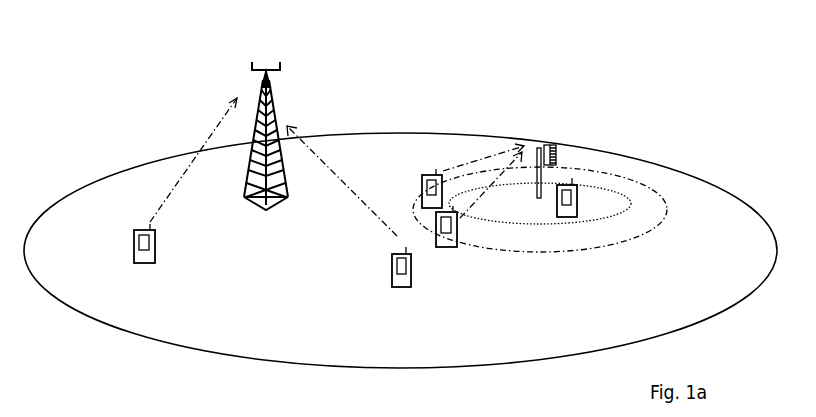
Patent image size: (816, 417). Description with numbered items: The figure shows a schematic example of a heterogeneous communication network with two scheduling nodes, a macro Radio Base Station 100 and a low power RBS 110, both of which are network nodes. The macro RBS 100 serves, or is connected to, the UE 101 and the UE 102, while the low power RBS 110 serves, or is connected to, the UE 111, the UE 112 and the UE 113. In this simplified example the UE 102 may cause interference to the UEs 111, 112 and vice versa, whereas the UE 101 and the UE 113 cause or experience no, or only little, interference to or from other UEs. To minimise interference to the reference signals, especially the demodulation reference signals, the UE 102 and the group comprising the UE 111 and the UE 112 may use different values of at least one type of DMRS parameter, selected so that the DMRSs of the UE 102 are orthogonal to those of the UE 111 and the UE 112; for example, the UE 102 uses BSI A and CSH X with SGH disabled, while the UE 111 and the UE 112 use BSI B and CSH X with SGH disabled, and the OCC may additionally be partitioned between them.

The macro Radio Base Station 100 is at (277, 118).
The UE 101 is at (155, 255).
The UE 102 is at (390, 284).
The low power RBS 110 is at (553, 166).
The UE 111 is at (422, 200).
The UE 112 is at (457, 230).
The UE 113 is at (578, 205).